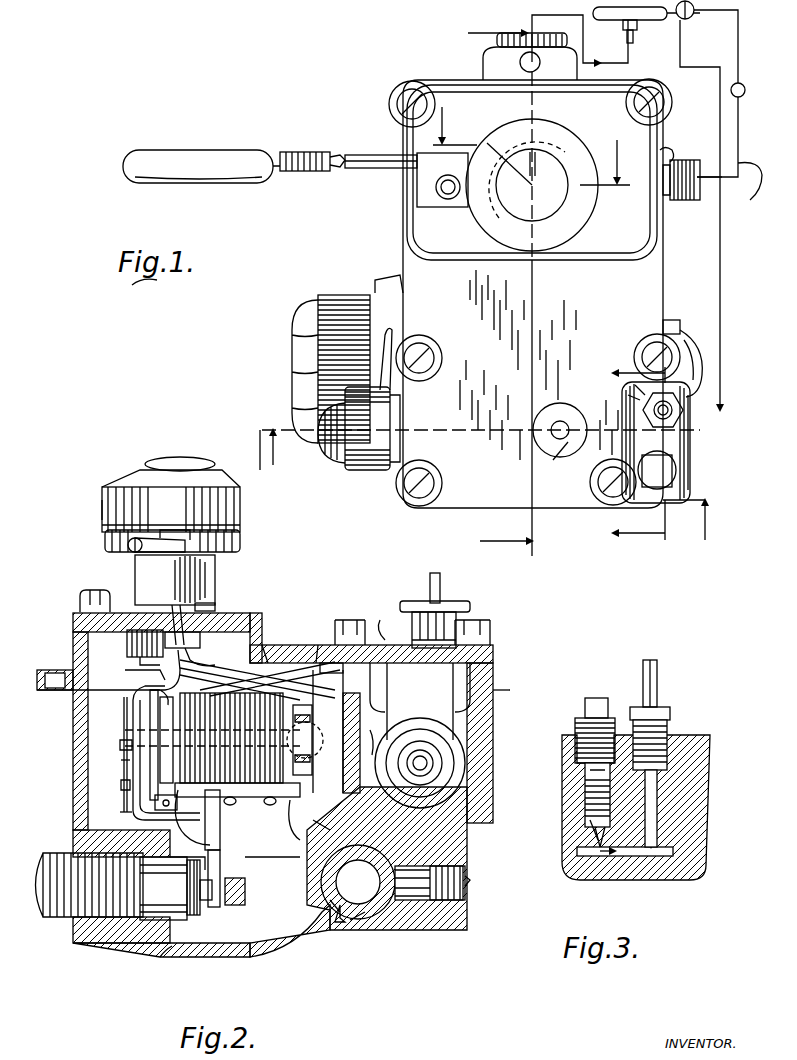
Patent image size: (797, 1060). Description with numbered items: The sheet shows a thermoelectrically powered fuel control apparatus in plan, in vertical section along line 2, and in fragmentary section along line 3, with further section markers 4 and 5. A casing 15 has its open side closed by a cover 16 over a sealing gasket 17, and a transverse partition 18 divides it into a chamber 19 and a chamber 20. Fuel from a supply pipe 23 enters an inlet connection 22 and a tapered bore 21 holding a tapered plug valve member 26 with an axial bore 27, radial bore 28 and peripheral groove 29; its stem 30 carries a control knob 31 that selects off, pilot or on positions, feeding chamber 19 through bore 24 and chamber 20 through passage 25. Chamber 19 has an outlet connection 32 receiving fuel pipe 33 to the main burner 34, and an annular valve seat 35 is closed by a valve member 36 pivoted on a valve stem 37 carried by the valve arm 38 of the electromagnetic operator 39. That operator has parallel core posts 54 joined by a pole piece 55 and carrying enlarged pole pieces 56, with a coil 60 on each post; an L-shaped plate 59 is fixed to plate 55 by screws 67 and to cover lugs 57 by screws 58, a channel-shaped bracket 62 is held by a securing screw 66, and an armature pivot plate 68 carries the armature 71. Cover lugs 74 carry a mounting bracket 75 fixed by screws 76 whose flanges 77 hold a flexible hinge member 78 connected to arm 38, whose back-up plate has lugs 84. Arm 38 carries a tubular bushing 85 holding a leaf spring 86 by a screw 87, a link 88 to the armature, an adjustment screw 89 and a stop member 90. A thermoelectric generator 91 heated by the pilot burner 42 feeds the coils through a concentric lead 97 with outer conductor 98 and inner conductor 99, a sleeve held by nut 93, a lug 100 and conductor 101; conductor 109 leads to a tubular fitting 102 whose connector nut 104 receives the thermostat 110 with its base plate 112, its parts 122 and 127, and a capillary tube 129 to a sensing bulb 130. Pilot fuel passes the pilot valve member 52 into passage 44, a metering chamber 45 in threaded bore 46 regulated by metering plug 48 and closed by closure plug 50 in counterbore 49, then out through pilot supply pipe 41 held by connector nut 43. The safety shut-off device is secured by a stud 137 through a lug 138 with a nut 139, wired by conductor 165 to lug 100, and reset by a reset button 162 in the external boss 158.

In FIG. 1, the section line 2- 2 is at (500, 296).
In FIG. 1, the section line 3- 3 is at (639, 454).
In FIG. 1, the section line 4- 4 is at (495, 485).
In FIG. 1, the section line 5- 5 is at (531, 146).
In FIG. 1, the casing 15 is at (685, 432).
In FIG. 2, the casing 15 is at (245, 960).
In FIG. 1, the cover 16 is at (586, 320).
In FIG. 2, the cover 16 is at (373, 621).
In FIG. 2, the sealing gasket 17 is at (505, 688).
In FIG. 2, the transverse partition 18 is at (343, 795).
In FIG. 2, the chamber 19 is at (282, 880).
In FIG. 2, the chamber 20 is at (368, 730).
In FIG. 2, the tapered bore 21 is at (395, 900).
In FIG. 1, the fuel inlet connection 22 is at (675, 320).
In FIG. 1, the fuel supply pipe 23 is at (696, 340).
In FIG. 2, the bore 24 is at (325, 905).
In FIG. 2, the passage 25 is at (343, 822).
In FIG. 2, the tapered plug valve member 26 is at (340, 920).
In FIG. 2, the axial bore 27 is at (358, 882).
In FIG. 2, the radial bore 28 is at (358, 882).
In FIG. 2, the peripheral groove 29 is at (365, 920).
In FIG. 1, the stem 30 is at (359, 428).
In FIG. 1, the control knob 31 is at (300, 316).
In FIG. 2, the fuel outlet connection 32 is at (120, 940).
In FIG. 1, the fuel pipe 33 is at (542, 62).
In FIG. 2, the fuel pipe 33 is at (60, 905).
In FIG. 1, the main burner 34 is at (620, 22).
In FIG. 2, the annular valve seat 35 is at (170, 950).
In FIG. 2, the valve member 36 is at (200, 905).
In FIG. 2, the valve stem 37 is at (240, 900).
In FIG. 2, the valve arm 38 is at (222, 840).
In FIG. 2, the electromagnetic operator 39 is at (271, 636).
In FIG. 1, the pilot fuel supply pipe 41 is at (650, 405).
In FIG. 2, the pilot fuel supply pipe 41 is at (440, 580).
In FIG. 1, the pilot burner 42 is at (640, 28).
In FIG. 1, the connector nut 43 is at (635, 390).
In FIG. 3, the passage 44 is at (610, 845).
In FIG. 3, the metering chamber 45 is at (588, 815).
In FIG. 3, the internally threaded bore 46 is at (585, 800).
In FIG. 3, the metering plug 48 is at (590, 787).
In FIG. 1, the counterbore 49 is at (670, 460).
In FIG. 3, the counterbore 49 is at (575, 748).
In FIG. 1, the closure plug 50 is at (665, 478).
In FIG. 3, the closure plug 50 is at (585, 712).
In FIG. 2, the valve member 52 is at (420, 759).
In FIG. 2, the core posts 54 is at (212, 727).
In FIG. 2, the pole piece 55 is at (270, 805).
In FIG. 2, the pole pieces 56 is at (212, 749).
In FIG. 2, the lugs 57 is at (316, 628).
In FIG. 2, the screws 58 is at (330, 731).
In FIG. 2, the L-shaped plate 59 is at (299, 820).
In FIG. 2, the coil 60 is at (231, 738).
In FIG. 2, the channel-shaped bracket 62 is at (204, 820).
In FIG. 2, the securing screw 66 is at (230, 805).
In FIG. 2, the screws 67 is at (295, 740).
In FIG. 2, the armature pivot plate 68 is at (190, 817).
In FIG. 2, the armature 71 is at (162, 797).
In FIG. 2, the lugs 74 is at (127, 645).
In FIG. 2, the mounting bracket 75 is at (135, 662).
In FIG. 2, the screws 76 is at (134, 674).
In FIG. 2, the flange 77 is at (172, 625).
In FIG. 2, the flexible hinge member 78 is at (165, 668).
In FIG. 2, the lugs 84 is at (200, 640).
In FIG. 2, the tubular bushing 85 is at (119, 810).
In FIG. 2, the leaf spring 86 is at (122, 762).
In FIG. 2, the screw 87 is at (113, 787).
In FIG. 2, the link 88 is at (124, 712).
In FIG. 2, the adjustment screw 89 is at (120, 749).
In FIG. 2, the stop member 90 is at (130, 705).
In FIG. 1, the thermoelectric generator 91 is at (690, 19).
In FIG. 1, the nut 93 is at (668, 150).
In FIG. 1, the concentric lead 97 is at (745, 86).
In FIG. 1, the outer conductor 98 is at (690, 171).
In FIG. 1, the inner conductor 99 is at (728, 192).
In FIG. 2, the lug 100 is at (205, 660).
In FIG. 2, the conductor 101 is at (280, 628).
In FIG. 2, the tubular fitting 102 is at (205, 606).
In FIG. 2, the connector nut 104 is at (210, 575).
In FIG. 2, the conductor 109 is at (181, 745).
In FIG. 1, the thermostat 110 is at (578, 213).
In FIG. 2, the thermostat 110 is at (215, 498).
In FIG. 2, the thermostat base plate 112 is at (240, 541).
In FIG. 1, the dial ring 122 is at (506, 226).
In FIG. 2, the dial ring 122 is at (105, 498).
In FIG. 1, the dial face 127 is at (555, 205).
In FIG. 2, the dial face 127 is at (176, 460).
In FIG. 1, the capillary tube 129 is at (348, 155).
In FIG. 2, the capillary tube 129 is at (128, 550).
In FIG. 1, the temperature sensing bulb 130 is at (188, 165).
In FIG. 2, the stud 137 is at (430, 770).
In FIG. 2, the lug 138 is at (436, 676).
In FIG. 2, the nut 139 is at (430, 740).
In FIG. 2, the external boss 158 is at (455, 630).
In FIG. 1, the reset button 162 is at (560, 442).
In FIG. 2, the reset button 162 is at (455, 603).
In FIG. 2, the conductor 165 is at (498, 690).